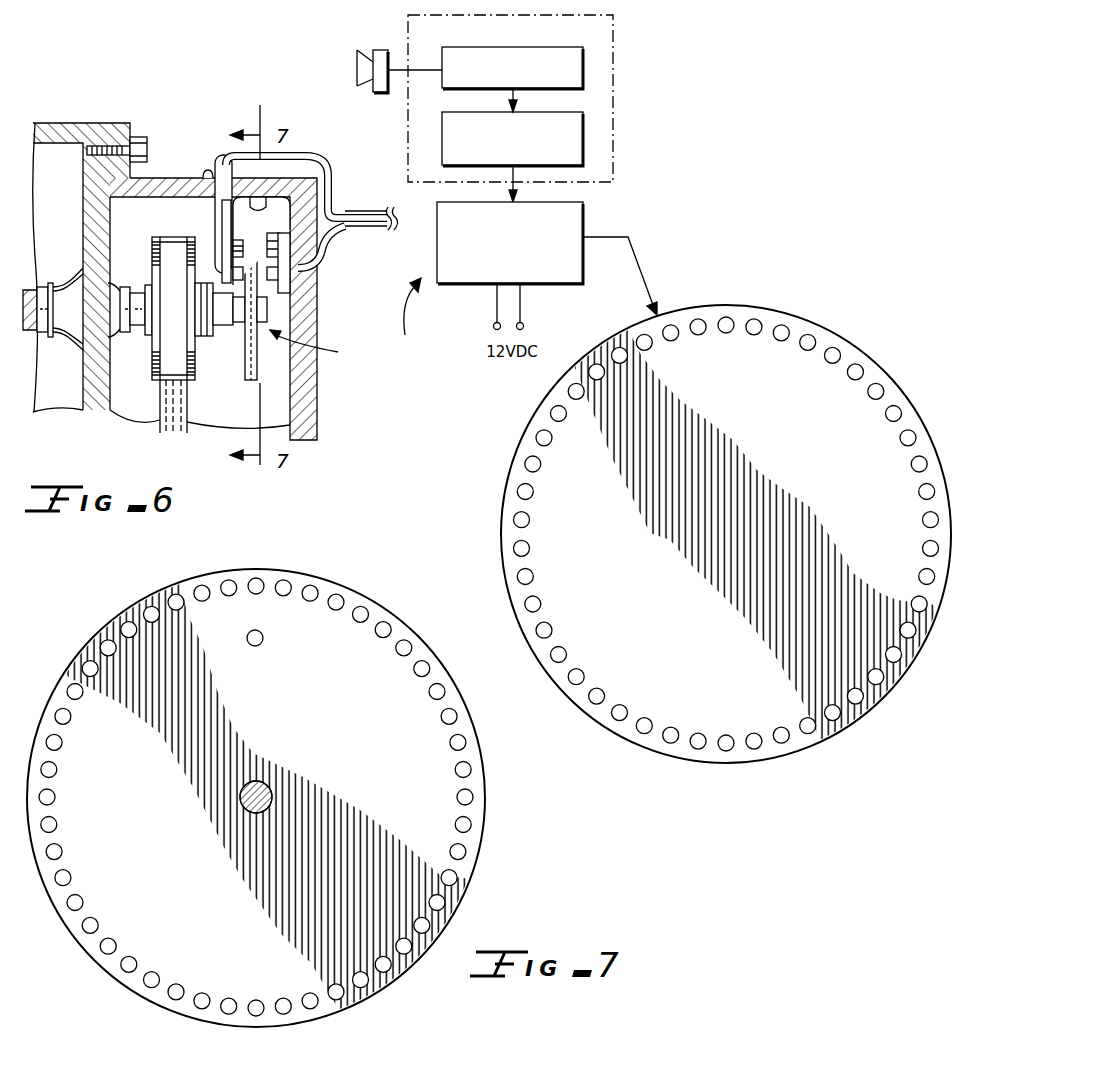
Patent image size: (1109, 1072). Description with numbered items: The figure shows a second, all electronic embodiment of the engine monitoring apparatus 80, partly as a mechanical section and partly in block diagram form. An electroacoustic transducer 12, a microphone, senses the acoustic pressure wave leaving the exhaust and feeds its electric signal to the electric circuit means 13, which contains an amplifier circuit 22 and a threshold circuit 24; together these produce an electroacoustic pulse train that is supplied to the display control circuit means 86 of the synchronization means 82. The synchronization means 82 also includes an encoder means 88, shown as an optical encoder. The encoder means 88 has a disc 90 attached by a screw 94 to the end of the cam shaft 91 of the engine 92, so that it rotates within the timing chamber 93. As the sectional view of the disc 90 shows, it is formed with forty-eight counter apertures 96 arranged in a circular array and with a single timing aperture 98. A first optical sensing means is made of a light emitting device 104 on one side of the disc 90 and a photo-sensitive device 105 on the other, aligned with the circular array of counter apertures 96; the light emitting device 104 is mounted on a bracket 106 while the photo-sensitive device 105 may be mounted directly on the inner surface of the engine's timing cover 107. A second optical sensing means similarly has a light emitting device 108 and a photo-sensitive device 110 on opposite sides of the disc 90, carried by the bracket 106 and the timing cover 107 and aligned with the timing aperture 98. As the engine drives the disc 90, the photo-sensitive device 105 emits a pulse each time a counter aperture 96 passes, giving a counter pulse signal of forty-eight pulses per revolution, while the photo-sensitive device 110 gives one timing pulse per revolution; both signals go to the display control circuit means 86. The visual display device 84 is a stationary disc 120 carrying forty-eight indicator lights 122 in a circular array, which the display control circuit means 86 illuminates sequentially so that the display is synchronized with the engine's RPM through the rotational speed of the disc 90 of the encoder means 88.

In FIG. 6, the electroacoustic transducer 12 is at (357, 66).
In FIG. 6, the electric circuit means 13 is at (612, 36).
In FIG. 6, the amplifier circuit 22 is at (538, 47).
In FIG. 6, the threshold circuit 24 is at (583, 125).
In FIG. 6, the apparatus 80 is at (718, 458).
In FIG. 6, the synchronization means 82 is at (413, 315).
In FIG. 6, the visual display device 84 is at (718, 524).
In FIG. 6, the display control circuit means 86 is at (578, 292).
In FIG. 6, the encoder means 88 is at (316, 344).
In FIG. 6, the disc 90 is at (250, 381).
In FIG. 7, the disc 90 is at (256, 791).
In FIG. 6, the cam shaft 91 is at (45, 288).
In FIG. 6, the engine 92 is at (96, 412).
In FIG. 6, the timing chamber 93 is at (200, 282).
In FIG. 6, the screw 94 is at (267, 317).
In FIG. 7, the screw 94 is at (270, 808).
In FIG. 7, the counter apertures 96 is at (386, 629).
In FIG. 7, the timing aperture 98 is at (250, 644).
In FIG. 6, the light emitting device 104 is at (240, 222).
In FIG. 6, the photo-sensitive device 105 is at (277, 223).
In FIG. 6, the bracket 106 is at (262, 196).
In FIG. 6, the timing cover 107 is at (318, 372).
In FIG. 6, the light emitting device 108 is at (243, 277).
In FIG. 6, the photo-sensitive device 110 is at (275, 271).
In FIG. 6, the stationary disc 120 is at (720, 469).
In FIG. 6, the indicator lights 122 is at (893, 405).